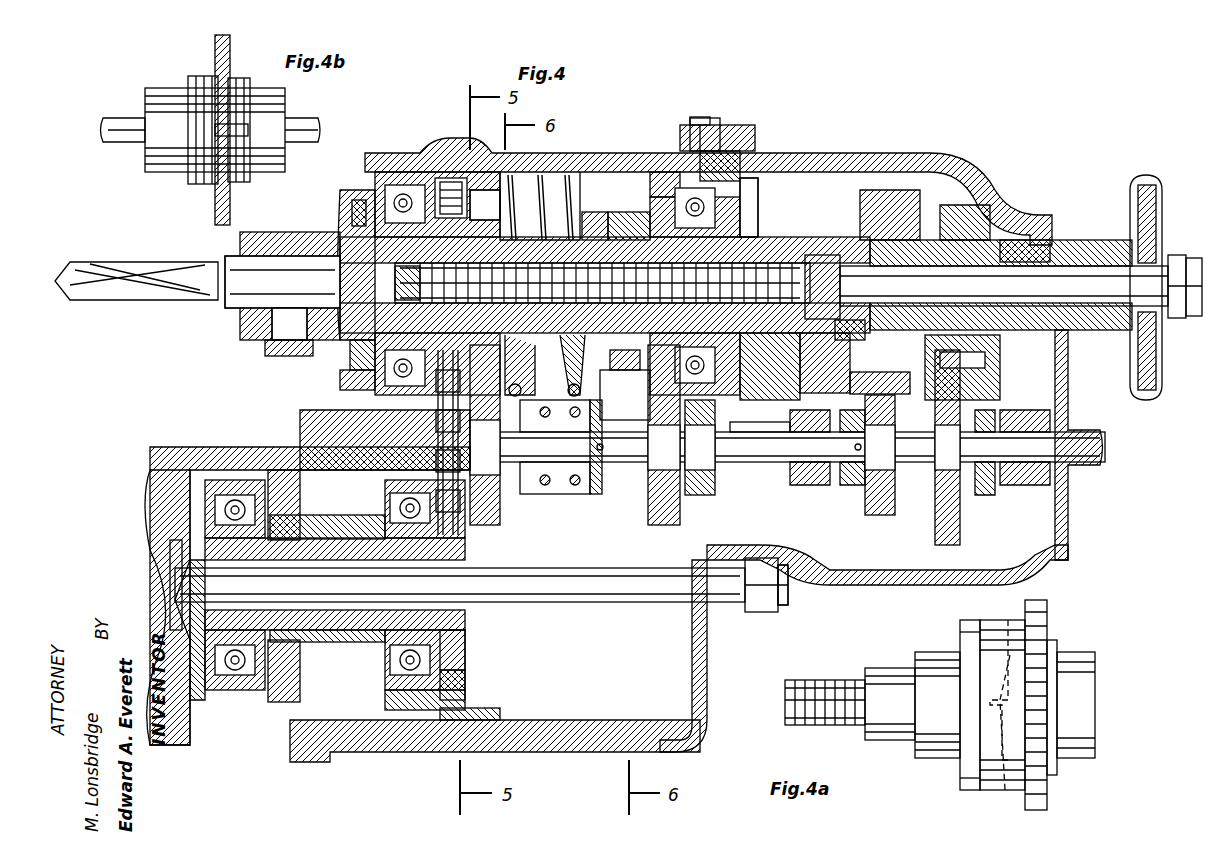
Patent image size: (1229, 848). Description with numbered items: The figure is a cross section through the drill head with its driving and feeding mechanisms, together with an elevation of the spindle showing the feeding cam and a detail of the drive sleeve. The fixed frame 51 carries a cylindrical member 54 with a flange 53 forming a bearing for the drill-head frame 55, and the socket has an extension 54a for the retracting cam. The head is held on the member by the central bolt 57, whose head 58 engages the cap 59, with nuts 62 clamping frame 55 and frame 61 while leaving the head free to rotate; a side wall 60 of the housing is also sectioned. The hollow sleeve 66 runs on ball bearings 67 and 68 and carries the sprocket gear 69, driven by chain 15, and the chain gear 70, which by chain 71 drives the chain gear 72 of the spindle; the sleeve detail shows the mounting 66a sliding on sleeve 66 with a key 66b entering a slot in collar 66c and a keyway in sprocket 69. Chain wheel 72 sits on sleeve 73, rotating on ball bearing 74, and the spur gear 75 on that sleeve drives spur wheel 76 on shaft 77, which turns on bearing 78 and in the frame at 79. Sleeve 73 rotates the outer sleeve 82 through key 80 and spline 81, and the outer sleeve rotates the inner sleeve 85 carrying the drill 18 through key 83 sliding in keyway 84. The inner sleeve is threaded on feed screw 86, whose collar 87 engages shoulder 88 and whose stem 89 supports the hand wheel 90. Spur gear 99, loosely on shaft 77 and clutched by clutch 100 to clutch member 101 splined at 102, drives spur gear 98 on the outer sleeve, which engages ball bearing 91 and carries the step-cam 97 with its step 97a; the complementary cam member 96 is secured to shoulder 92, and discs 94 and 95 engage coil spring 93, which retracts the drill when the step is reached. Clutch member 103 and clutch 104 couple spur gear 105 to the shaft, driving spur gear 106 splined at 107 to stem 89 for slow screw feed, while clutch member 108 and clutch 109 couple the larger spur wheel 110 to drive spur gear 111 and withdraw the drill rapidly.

In FIG. 4, the chain 15 is at (300, 480).
In FIG. 4, the drill 18 is at (110, 292).
In FIG. 4, the frame 51 is at (215, 448).
In FIG. 4, the flange 53 is at (292, 745).
In FIG. 4, the cylindrical member 54 is at (385, 458).
In FIG. 4, the extension 54a is at (500, 716).
In FIG. 4, the frame of the drill head 55 is at (635, 160).
In FIG. 4B, the central bolt 57 is at (118, 118).
In FIG. 4, the central bolt 57 is at (545, 592).
In FIG. 4, the head 58 is at (170, 555).
In FIG. 4, the cap 59 is at (190, 505).
In FIG. 4, the housing side wall 60 is at (712, 620).
In FIG. 4, the frame 61 is at (848, 156).
In FIG. 4, the nuts 62 is at (770, 610).
In FIG. 4B, the sleeve 66 is at (155, 90).
In FIG. 4, the sleeve 66 is at (352, 538).
In FIG. 4B, the mounting 66a is at (192, 182).
In FIG. 4, the mounting 66a is at (300, 520).
In FIG. 4B, the key 66b is at (248, 130).
In FIG. 4, the key 66b is at (300, 638).
In FIG. 4B, the collar 66c is at (242, 182).
In FIG. 4, the ball bearing 67 is at (228, 680).
In FIG. 4, the ball bearing 68 is at (390, 688).
In FIG. 4B, the chain or sprocket gear 69 is at (215, 48).
In FIG. 4, the chain or sprocket gear 69 is at (290, 656).
In FIG. 4, the chain gear 70 is at (466, 645).
In FIG. 4, the chain 71 is at (466, 686).
In FIG. 4, the chain gear 72 is at (452, 180).
In FIG. 4, the sleeve 73 is at (358, 350).
In FIG. 4, the ball bearing 74 is at (360, 380).
In FIG. 4, the spur gear 75 is at (492, 192).
In FIG. 4, the spur wheel 76 is at (495, 515).
In FIG. 4, the shaft 77 is at (540, 455).
In FIG. 4, the bearing 78 is at (578, 490).
In FIG. 4, the frame bearing 79 is at (1108, 422).
In FIG. 4, the key 80 is at (365, 210).
In FIG. 4, the spline 81 is at (352, 216).
In FIG. 4, the outer sleeve 82 is at (814, 236).
In FIG. 4A, the outer sleeve 82 is at (942, 654).
In FIG. 4, the key 83 is at (524, 365).
In FIG. 4, the keyway 84 is at (770, 340).
In FIG. 4, the inner sleeve 85 is at (806, 340).
In FIG. 4A, the inner sleeve 85 is at (893, 672).
In FIG. 4, the feed screw 86 is at (760, 265).
In FIG. 4A, the feed screw 86 is at (830, 682).
In FIG. 4, the collar 87 is at (832, 256).
In FIG. 4, the shoulder 88 is at (848, 340).
In FIG. 4, the stem 89 is at (1108, 278).
In FIG. 4, the hand wheel 90 is at (1138, 338).
In FIG. 4, the ball bearing 91 is at (742, 200).
In FIG. 4, the shoulder 92 is at (592, 212).
In FIG. 4A, the shoulder 92 is at (962, 622).
In FIG. 4, the coil spring 93 is at (568, 372).
In FIG. 4, the disc 94 is at (519, 390).
In FIG. 4, the disc 95 is at (578, 392).
In FIG. 4, the cam member 96 is at (625, 212).
In FIG. 4A, the cam member 96 is at (1000, 620).
In FIG. 4, the step-cam 97 is at (634, 362).
In FIG. 4A, the step-cam 97 is at (1005, 790).
In FIG. 4A, the step 97a is at (996, 690).
In FIG. 4, the spur gear 98 is at (660, 172).
In FIG. 4A, the spur gear 98 is at (1047, 796).
In FIG. 4, the spur gear 99 is at (650, 505).
In FIG. 4, the clutch 100 is at (690, 495).
In FIG. 4, the clutch member 101 is at (712, 478).
In FIG. 4, the spline 102 is at (760, 418).
In FIG. 4, the clutch member 103 is at (800, 480).
In FIG. 4, the clutch 104 is at (850, 486).
In FIG. 4, the spur gear 105 is at (878, 516).
In FIG. 4, the spur gear 106 is at (868, 380).
In FIG. 4, the spline 107 is at (1026, 258).
In FIG. 4, the clutch member 108 is at (1018, 486).
In FIG. 4, the clutch 109 is at (984, 495).
In FIG. 4, the spur wheel 110 is at (958, 532).
In FIG. 4, the spur gear 111 is at (962, 362).